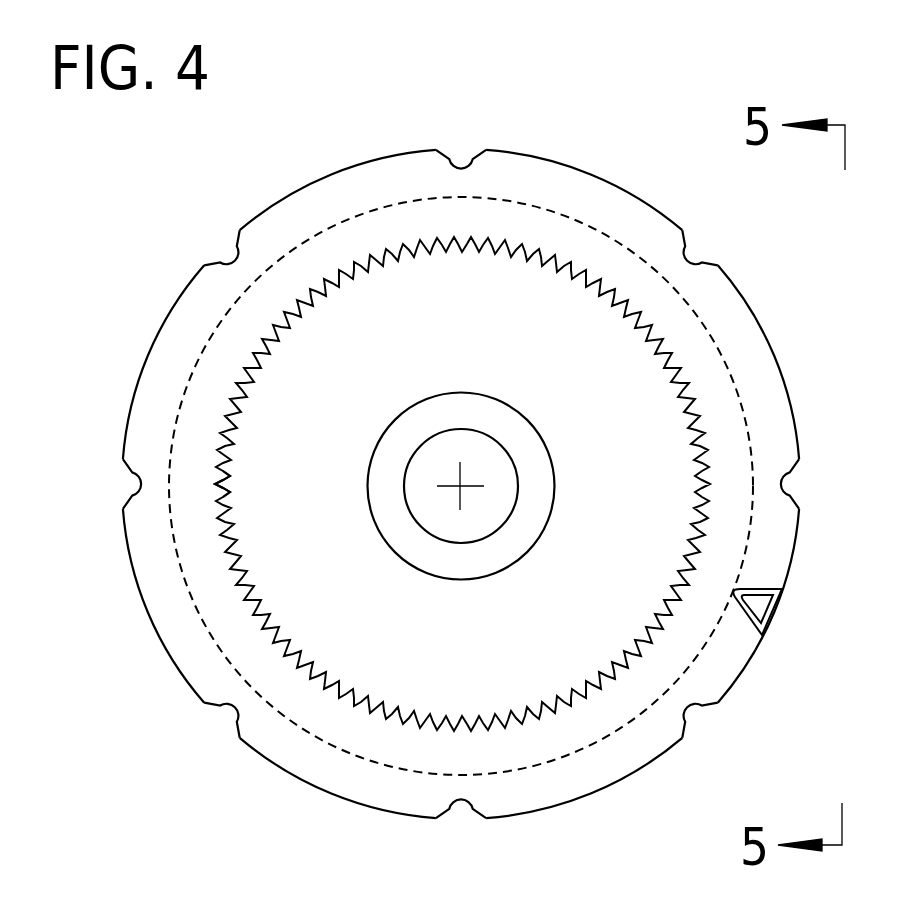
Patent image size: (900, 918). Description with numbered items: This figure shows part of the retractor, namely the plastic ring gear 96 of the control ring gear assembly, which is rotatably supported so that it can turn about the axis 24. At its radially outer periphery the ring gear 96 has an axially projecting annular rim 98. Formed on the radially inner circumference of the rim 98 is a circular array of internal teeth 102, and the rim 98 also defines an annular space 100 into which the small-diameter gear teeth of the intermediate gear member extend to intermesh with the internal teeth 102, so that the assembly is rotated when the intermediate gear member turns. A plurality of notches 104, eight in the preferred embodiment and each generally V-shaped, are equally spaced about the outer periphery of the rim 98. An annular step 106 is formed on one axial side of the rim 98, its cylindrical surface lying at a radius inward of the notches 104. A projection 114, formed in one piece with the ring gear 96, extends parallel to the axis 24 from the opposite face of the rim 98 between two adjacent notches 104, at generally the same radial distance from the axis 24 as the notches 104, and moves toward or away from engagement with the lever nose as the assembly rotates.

The rim 98 is at (363, 186).
The notches 104 is at (447, 160).
The annular step 106 is at (595, 222).
The ring gear 96 is at (300, 357).
The internal teeth 102 is at (233, 497).
The annular space 100 is at (262, 449).
The axis 24 is at (460, 486).
The projection 114 is at (755, 606).